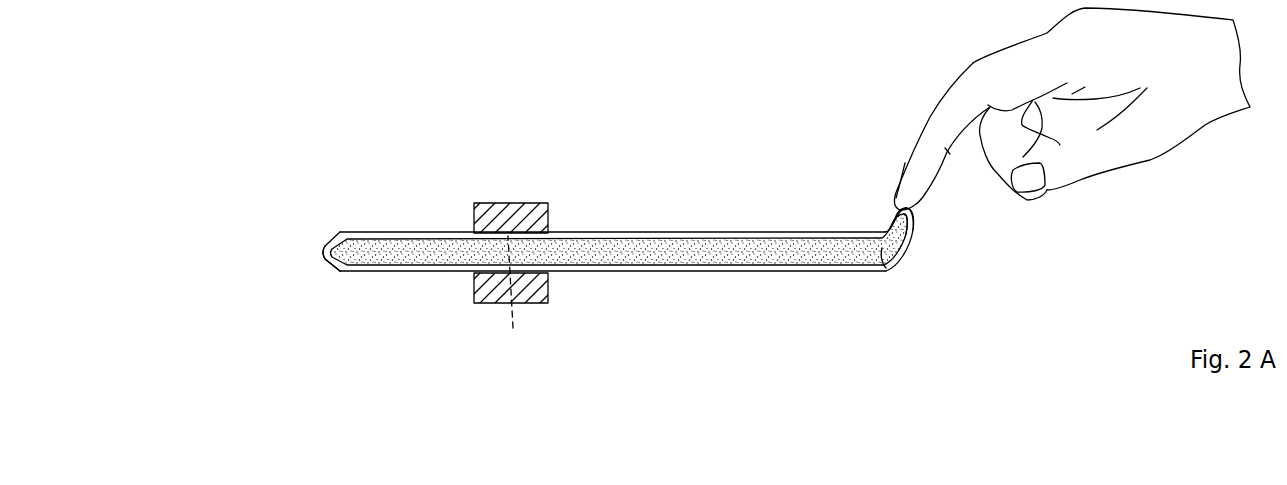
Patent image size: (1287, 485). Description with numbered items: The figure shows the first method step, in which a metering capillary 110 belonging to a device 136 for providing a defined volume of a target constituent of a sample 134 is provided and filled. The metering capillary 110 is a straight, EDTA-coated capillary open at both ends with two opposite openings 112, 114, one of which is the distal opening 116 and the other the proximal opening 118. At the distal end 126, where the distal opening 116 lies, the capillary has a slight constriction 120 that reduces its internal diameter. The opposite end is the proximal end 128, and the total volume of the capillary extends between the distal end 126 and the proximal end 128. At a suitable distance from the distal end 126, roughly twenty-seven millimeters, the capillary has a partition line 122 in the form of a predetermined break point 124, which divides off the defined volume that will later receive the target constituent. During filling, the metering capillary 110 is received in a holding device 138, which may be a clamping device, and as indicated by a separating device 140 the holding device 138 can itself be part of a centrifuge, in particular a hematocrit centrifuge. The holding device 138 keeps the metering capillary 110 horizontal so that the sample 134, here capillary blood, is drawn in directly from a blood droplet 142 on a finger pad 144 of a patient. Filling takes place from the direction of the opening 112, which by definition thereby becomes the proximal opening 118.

The metering capillary 110 is at (664, 233).
The opening 112 is at (902, 287).
The opening 114 is at (277, 227).
The distal opening 116 is at (324, 246).
The proximal opening 118 is at (893, 273).
The constriction 120 is at (325, 280).
The partition line 122 is at (543, 298).
The predetermined break point 124 is at (543, 298).
The distal end 126 is at (304, 249).
The proximal end 128 is at (924, 281).
The sample 134 is at (715, 252).
The device 136 is at (506, 213).
The holding device 138 is at (506, 213).
The separating device 140 is at (507, 203).
The blood droplet 142 is at (892, 218).
The finger pad 144 is at (1072, 109).